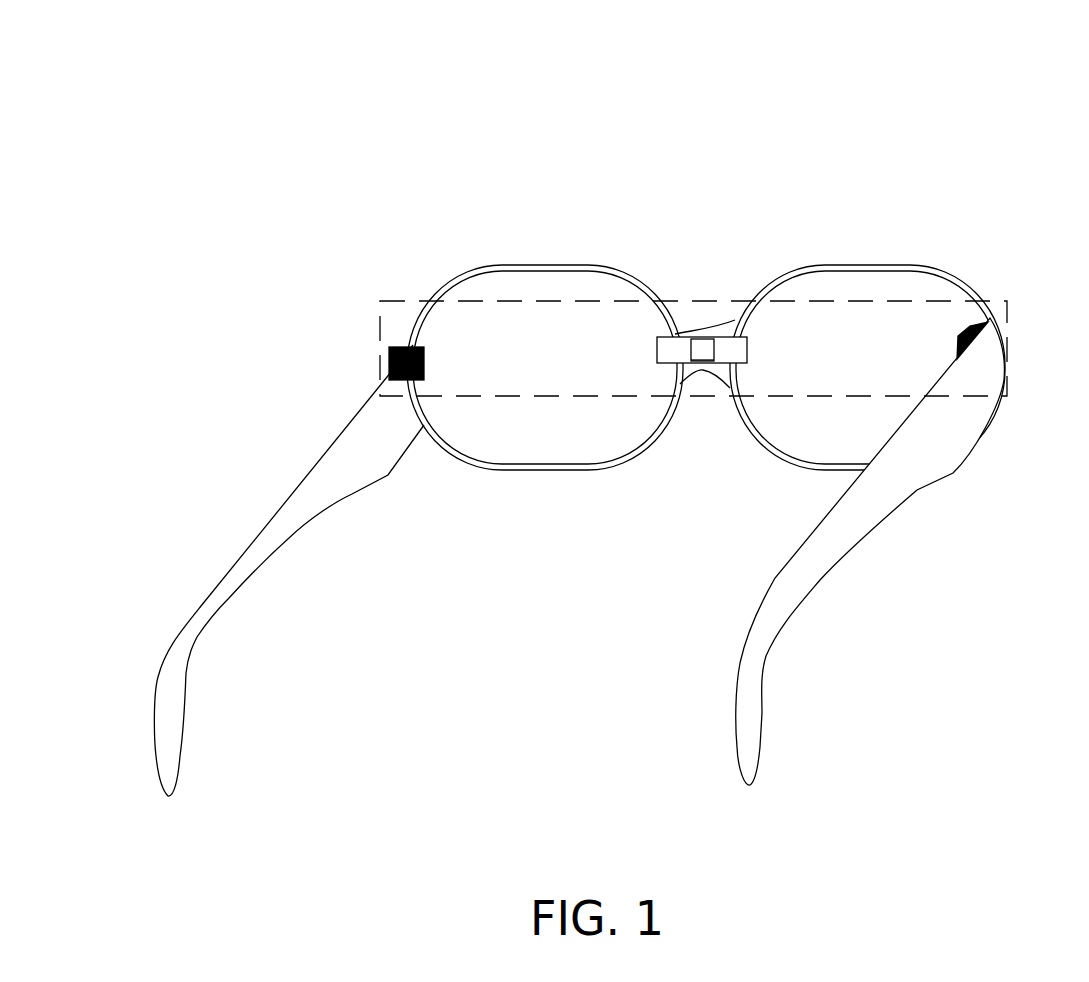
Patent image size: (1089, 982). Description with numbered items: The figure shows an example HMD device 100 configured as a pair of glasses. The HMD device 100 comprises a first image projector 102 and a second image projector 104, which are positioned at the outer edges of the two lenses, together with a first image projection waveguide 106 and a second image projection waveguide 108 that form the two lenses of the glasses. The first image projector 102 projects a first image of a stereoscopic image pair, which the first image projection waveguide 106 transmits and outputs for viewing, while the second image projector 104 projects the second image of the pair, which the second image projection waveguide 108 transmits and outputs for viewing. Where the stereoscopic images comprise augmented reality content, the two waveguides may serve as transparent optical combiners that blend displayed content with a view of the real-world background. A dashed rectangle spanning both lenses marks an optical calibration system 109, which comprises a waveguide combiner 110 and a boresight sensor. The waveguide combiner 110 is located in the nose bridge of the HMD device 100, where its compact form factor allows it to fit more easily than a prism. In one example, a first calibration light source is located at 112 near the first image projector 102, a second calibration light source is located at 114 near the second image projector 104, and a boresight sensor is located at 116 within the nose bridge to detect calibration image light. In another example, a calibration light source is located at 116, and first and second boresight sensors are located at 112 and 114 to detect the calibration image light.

The HMD device 100 is at (540, 55).
The first image projector 102 is at (424, 368).
The second image projector 104 is at (957, 352).
The first image projection waveguide 106 is at (560, 432).
The second image projection waveguide 108 is at (862, 428).
The optical calibration system 109 is at (1003, 294).
The waveguide combiner 110 is at (657, 354).
The first calibration light source location 112 is at (437, 332).
The second calibration light source location 114 is at (952, 316).
The boresight sensor location 116 is at (707, 337).